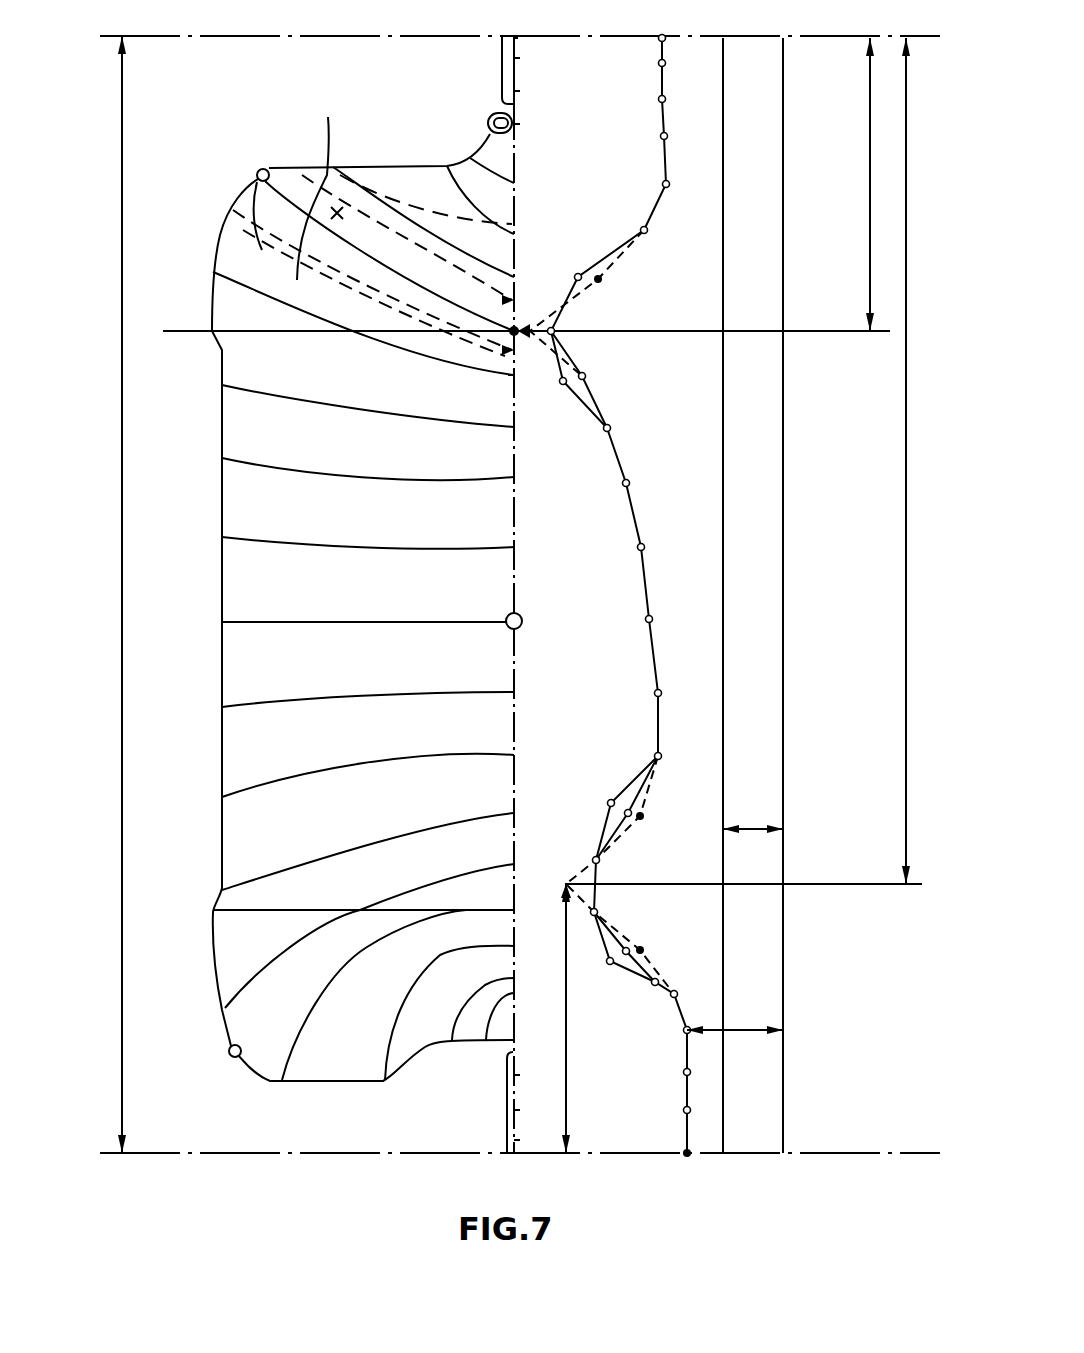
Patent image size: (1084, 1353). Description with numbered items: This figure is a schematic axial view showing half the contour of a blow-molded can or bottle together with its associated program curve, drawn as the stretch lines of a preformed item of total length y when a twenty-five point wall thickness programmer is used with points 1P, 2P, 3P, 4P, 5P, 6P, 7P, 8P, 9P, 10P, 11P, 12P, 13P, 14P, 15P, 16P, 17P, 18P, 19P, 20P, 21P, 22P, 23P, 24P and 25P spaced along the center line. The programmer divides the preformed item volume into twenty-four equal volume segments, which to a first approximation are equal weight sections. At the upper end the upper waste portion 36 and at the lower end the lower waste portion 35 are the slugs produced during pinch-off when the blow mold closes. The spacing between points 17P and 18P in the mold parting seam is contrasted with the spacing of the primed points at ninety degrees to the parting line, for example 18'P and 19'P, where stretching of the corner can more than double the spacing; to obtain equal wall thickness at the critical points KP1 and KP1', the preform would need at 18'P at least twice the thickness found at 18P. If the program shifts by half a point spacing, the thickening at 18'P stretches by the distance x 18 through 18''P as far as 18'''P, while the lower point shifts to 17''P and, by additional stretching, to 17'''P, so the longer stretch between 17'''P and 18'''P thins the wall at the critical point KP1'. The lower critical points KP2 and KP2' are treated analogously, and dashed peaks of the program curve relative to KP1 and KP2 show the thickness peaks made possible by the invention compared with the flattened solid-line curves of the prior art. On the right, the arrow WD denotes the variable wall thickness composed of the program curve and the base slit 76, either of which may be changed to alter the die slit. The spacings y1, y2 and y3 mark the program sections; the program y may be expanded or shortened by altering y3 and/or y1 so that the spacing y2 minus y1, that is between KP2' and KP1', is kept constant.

The upper waste portion 36 is at (502, 72).
The lower waste portion 35 is at (507, 1105).
The base slit 76 is at (748, 829).
The distance x 18 is at (316, 260).
The critical point KP1 is at (469, 367).
The critical point KP1' is at (255, 230).
The critical point KP2 is at (508, 890).
The lower critical point KP2' is at (208, 1088).
The point 1P is at (530, 1138).
The point 2P is at (530, 1109).
The point 3P is at (530, 1072).
The point 4P is at (527, 1036).
The point 5P is at (516, 1011).
The point 6P is at (499, 1002).
The point 7P is at (466, 1006).
The point 8P is at (414, 989).
The point 9P is at (386, 929).
The point 10P is at (389, 845).
The point 11P is at (389, 769).
The point 12P is at (390, 692).
The point 13P is at (395, 618).
The point 14P is at (390, 543).
The point 15P is at (390, 473).
The point 16P is at (390, 409).
The point 17P is at (362, 321).
The point 18P is at (410, 256).
The point 19P is at (445, 227).
The point 20P is at (503, 205).
The point 21P is at (514, 175).
The point 22P is at (523, 125).
The point 23P is at (536, 91).
The point 24P is at (536, 58).
The point 25P is at (533, 24).
The point 17''P is at (340, 282).
The point 17'''P is at (328, 261).
The point 18'P is at (252, 163).
The point 18''P is at (398, 225).
The point 18'''P is at (326, 183).
The point 19'P is at (423, 185).
The total length y is at (122, 598).
The point spacing y1 is at (868, 192).
The point spacing y2 is at (906, 470).
The point spacing y3 is at (566, 1046).
The variable wall thickness WD is at (745, 1030).